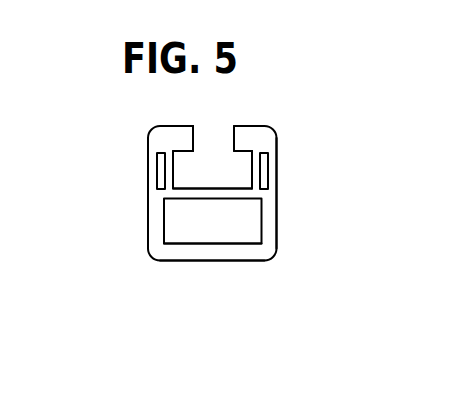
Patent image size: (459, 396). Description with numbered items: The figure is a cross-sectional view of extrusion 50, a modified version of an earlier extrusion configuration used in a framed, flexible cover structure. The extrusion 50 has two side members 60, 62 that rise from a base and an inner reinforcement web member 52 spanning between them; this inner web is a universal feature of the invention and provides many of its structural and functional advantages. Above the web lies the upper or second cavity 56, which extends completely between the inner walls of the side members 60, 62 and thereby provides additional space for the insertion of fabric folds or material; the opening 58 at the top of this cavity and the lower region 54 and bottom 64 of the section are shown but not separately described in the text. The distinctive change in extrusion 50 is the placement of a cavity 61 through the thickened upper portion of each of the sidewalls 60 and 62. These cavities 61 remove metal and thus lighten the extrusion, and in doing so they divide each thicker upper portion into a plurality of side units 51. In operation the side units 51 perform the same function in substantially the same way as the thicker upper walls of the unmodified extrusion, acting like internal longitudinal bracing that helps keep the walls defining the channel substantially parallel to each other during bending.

The extrusion cross-sectional configuration 50 is at (137, 134).
The side units 51 is at (252, 172).
The inner reinforcement web member 52 is at (227, 197).
The bottom wall of channel 54 is at (197, 226).
The upper or second cavity 56 is at (217, 168).
The slot opening 58 is at (195, 133).
The side member 60 is at (268, 222).
The cavity 61 is at (162, 172).
The side member 62 is at (157, 217).
The bottom wall 64 is at (218, 260).